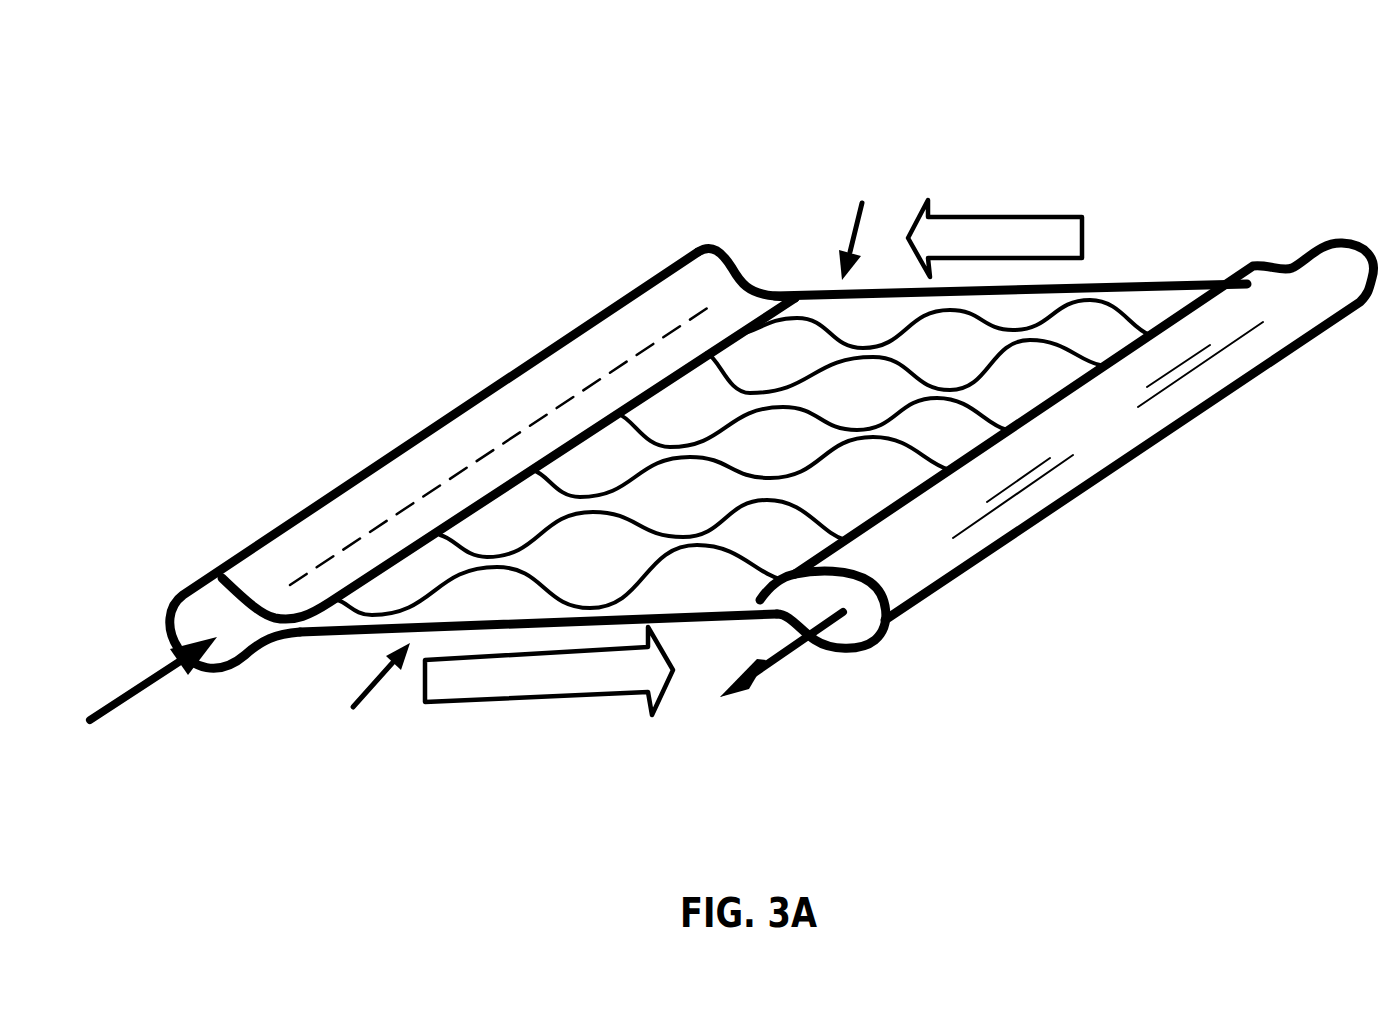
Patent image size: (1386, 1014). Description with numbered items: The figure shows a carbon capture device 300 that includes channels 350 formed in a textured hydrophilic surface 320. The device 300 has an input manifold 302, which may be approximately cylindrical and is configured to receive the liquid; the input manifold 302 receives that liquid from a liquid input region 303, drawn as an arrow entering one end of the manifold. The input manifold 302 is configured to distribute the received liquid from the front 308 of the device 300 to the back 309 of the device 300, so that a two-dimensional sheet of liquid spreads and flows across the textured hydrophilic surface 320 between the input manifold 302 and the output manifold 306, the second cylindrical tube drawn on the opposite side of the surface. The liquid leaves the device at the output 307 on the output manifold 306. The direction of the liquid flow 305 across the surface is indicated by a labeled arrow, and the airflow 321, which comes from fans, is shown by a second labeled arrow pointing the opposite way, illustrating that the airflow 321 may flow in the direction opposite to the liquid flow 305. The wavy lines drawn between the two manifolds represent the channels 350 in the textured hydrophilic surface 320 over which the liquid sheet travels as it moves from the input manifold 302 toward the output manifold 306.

The carbon capture device 300 is at (1297, 35).
The input manifold 302 is at (657, 307).
The liquid input region 303 is at (140, 697).
The liquid flow 305 is at (620, 687).
The output manifold 306 is at (1280, 340).
The liquid output 307 is at (790, 657).
The front 308 is at (370, 695).
The back 309 is at (858, 226).
The textured hydrophilic surface 320 is at (887, 335).
The airflow 321 is at (1055, 249).
The channels 350 is at (850, 441).